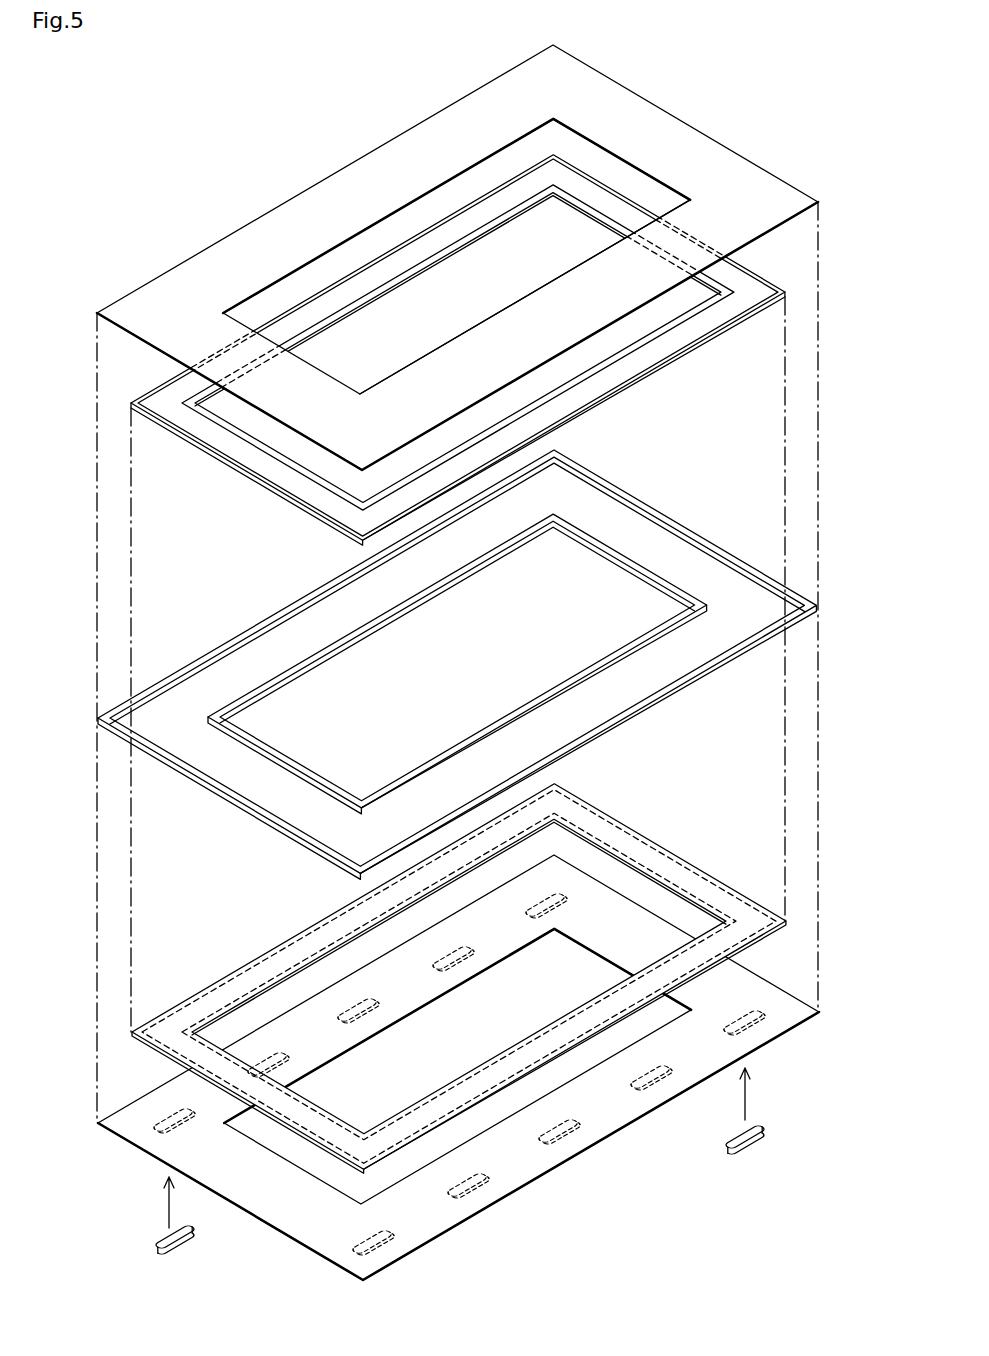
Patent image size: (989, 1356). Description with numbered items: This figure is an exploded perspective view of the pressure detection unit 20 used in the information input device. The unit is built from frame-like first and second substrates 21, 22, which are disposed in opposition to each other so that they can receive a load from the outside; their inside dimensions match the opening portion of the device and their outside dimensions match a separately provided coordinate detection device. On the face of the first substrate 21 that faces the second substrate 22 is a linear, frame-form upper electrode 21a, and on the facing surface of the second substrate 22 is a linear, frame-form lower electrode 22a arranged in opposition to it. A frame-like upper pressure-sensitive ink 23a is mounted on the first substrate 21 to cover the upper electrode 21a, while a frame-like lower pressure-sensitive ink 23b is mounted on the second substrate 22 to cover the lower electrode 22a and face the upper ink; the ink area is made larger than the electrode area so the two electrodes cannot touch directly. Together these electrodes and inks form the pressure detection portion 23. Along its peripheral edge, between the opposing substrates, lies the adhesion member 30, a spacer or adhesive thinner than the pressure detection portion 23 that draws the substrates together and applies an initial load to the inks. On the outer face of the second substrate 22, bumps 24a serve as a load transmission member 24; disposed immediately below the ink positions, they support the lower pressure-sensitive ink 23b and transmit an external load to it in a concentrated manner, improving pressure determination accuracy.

The pressure detection unit 20 is at (801, 143).
The first substrate 21 is at (375, 175).
The upper electrode 21a is at (657, 351).
The second substrate 22 is at (268, 1213).
The lower electrode 22a is at (651, 830).
The pressure detection portion 23 is at (205, 452).
The upper pressure-sensitive ink 23a is at (282, 495).
The lower pressure-sensitive ink 23b is at (273, 965).
The load transmission member 24 is at (470, 1196).
The bump 24a is at (531, 921).
The adhesion member 30 is at (372, 648).